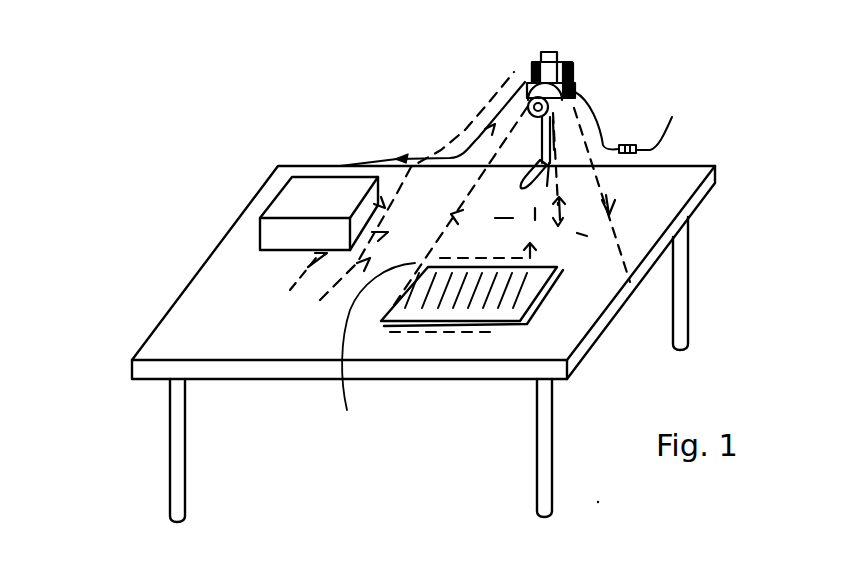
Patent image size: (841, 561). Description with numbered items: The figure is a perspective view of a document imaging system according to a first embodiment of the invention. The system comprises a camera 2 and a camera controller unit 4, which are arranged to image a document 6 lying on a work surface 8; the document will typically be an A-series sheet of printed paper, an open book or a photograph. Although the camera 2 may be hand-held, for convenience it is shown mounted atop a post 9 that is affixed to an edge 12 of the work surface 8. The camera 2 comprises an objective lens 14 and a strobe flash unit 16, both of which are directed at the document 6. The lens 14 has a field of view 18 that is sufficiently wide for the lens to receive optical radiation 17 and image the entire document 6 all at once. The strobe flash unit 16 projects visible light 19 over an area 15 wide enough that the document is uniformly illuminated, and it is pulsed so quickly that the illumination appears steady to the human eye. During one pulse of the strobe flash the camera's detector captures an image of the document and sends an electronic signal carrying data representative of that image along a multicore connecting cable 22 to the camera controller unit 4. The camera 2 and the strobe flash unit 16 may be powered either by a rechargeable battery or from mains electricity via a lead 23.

The camera 2 is at (578, 74).
The camera controller unit 4 is at (308, 184).
The document 6 is at (547, 291).
The work surface 8 is at (671, 198).
The post 9 is at (553, 150).
The edge 12 is at (660, 163).
The objective lens 14 is at (572, 110).
The area 15 is at (283, 320).
The strobe flash unit 16 is at (558, 53).
The optical radiation 17 is at (566, 240).
The field of view 18 is at (512, 325).
The visible light 19 is at (616, 240).
The multicore connecting cable 22 is at (388, 122).
The lead 23 is at (637, 122).